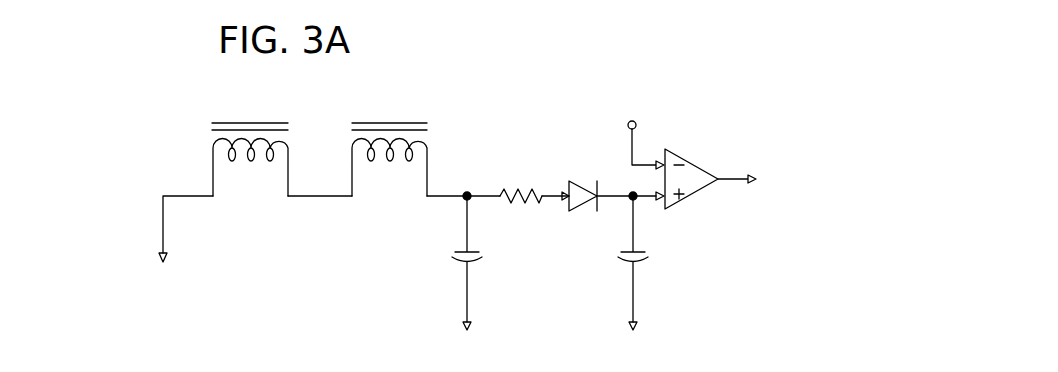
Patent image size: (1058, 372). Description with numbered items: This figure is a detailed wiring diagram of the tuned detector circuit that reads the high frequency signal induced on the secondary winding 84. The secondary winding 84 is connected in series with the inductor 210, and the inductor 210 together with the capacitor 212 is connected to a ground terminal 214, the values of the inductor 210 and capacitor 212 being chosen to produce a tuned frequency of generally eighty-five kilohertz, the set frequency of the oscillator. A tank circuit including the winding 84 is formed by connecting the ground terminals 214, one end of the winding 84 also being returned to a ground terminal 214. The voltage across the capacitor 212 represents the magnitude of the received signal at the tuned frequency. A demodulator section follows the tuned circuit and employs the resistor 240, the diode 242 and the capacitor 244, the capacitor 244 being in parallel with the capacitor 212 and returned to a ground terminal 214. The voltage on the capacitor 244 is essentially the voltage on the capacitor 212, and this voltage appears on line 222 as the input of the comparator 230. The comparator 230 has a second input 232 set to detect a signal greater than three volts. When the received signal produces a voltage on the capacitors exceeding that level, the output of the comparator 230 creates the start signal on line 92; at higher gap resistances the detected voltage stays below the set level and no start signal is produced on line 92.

The secondary winding 84 is at (247, 135).
The inductor 210 is at (423, 118).
The resistor 240 is at (521, 187).
The diode 242 is at (583, 170).
The capacitor 212 is at (460, 258).
The line (input of comparator) 222 is at (638, 200).
The capacitor 244 is at (646, 260).
The second input 232 is at (633, 140).
The comparator 230 is at (698, 161).
The line (start signal) 92 is at (735, 178).
The ground terminal 214 is at (168, 262).